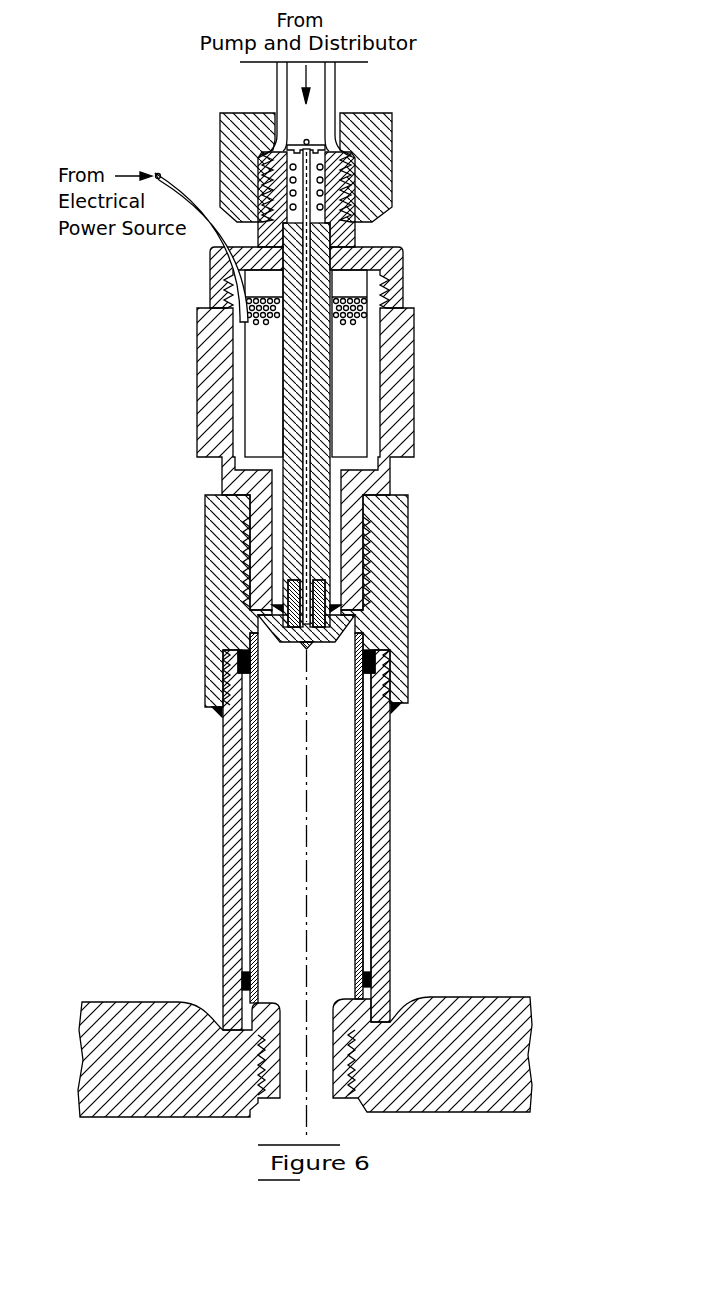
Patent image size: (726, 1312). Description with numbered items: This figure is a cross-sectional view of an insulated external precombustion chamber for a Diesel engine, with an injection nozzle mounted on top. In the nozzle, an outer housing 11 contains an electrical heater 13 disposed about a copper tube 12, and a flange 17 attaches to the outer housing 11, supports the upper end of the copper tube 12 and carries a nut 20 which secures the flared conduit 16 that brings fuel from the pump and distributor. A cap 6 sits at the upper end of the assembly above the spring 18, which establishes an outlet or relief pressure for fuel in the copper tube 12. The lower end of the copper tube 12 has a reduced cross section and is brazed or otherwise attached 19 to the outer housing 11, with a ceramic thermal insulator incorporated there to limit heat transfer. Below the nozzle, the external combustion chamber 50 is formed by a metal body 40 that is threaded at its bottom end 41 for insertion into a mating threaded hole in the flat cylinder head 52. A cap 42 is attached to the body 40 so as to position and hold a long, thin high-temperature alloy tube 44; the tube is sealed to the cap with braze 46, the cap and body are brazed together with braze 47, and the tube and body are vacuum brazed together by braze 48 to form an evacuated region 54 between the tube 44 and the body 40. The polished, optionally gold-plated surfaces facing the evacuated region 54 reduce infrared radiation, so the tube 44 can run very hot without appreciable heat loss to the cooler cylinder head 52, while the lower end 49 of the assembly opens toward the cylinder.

The cap / electrode head 6 is at (318, 146).
The outer housing 11 is at (414, 375).
The copper tube 12 is at (360, 392).
The electrical heater 13 is at (273, 394).
The flared conduit 16 is at (335, 93).
The flange 17 is at (403, 249).
The spring 18 is at (290, 178).
The brazed attachment 19 is at (336, 272).
The nut 20 is at (393, 168).
The metal body 40 is at (378, 888).
The threaded bottom end 41 is at (363, 1058).
The cap 42 is at (408, 580).
The high-temperature alloy tube 44 is at (352, 716).
The braze 46 is at (252, 692).
The braze 47 is at (212, 720).
The braze 48 is at (256, 965).
The lower end / outlet 49 is at (280, 1088).
The combustion chamber 50 is at (320, 854).
The cylinder head 52 is at (532, 1045).
The evacuated region 54 is at (368, 792).